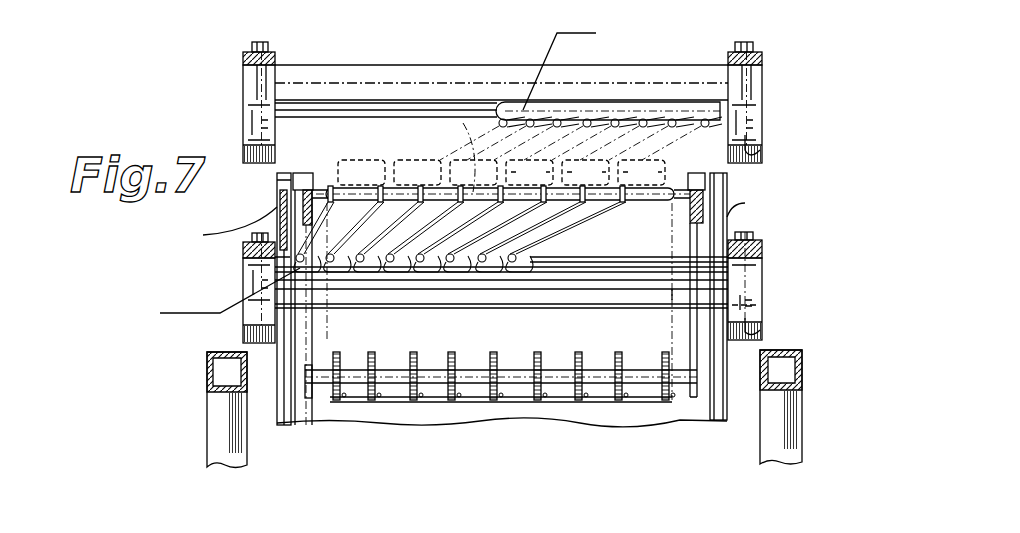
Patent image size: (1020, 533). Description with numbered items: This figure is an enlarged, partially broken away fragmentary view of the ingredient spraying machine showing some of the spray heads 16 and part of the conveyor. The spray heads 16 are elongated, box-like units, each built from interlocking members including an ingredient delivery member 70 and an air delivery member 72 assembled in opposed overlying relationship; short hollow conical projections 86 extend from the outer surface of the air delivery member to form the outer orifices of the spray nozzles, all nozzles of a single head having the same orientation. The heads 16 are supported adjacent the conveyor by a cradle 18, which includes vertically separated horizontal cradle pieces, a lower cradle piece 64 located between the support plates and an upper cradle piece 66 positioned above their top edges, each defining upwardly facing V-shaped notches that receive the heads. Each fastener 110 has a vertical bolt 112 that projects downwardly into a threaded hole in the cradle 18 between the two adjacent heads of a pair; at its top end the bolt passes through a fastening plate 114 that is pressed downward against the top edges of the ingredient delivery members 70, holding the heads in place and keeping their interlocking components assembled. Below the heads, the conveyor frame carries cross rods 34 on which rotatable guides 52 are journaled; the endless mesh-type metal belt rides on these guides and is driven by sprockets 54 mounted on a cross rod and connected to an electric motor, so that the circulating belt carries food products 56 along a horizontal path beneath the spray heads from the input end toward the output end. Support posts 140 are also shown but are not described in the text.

The spray head 16 is at (382, 90).
The cradle 18 is at (777, 128).
The cross rod 34 is at (385, 208).
The rotatable guide 52 is at (400, 192).
The sprocket 54 is at (330, 400).
The food product 56 is at (358, 145).
The lower cradle piece 64 is at (760, 330).
The upper cradle piece 66 is at (763, 150).
The ingredient delivery member 70 is at (537, 283).
The air delivery member 72 is at (645, 293).
The hollow conical projection 86 is at (630, 107).
The fastener 110 is at (238, 56).
The bolt 112 is at (263, 42).
The fastening plate 114 is at (277, 57).
The support post 140 is at (217, 418).